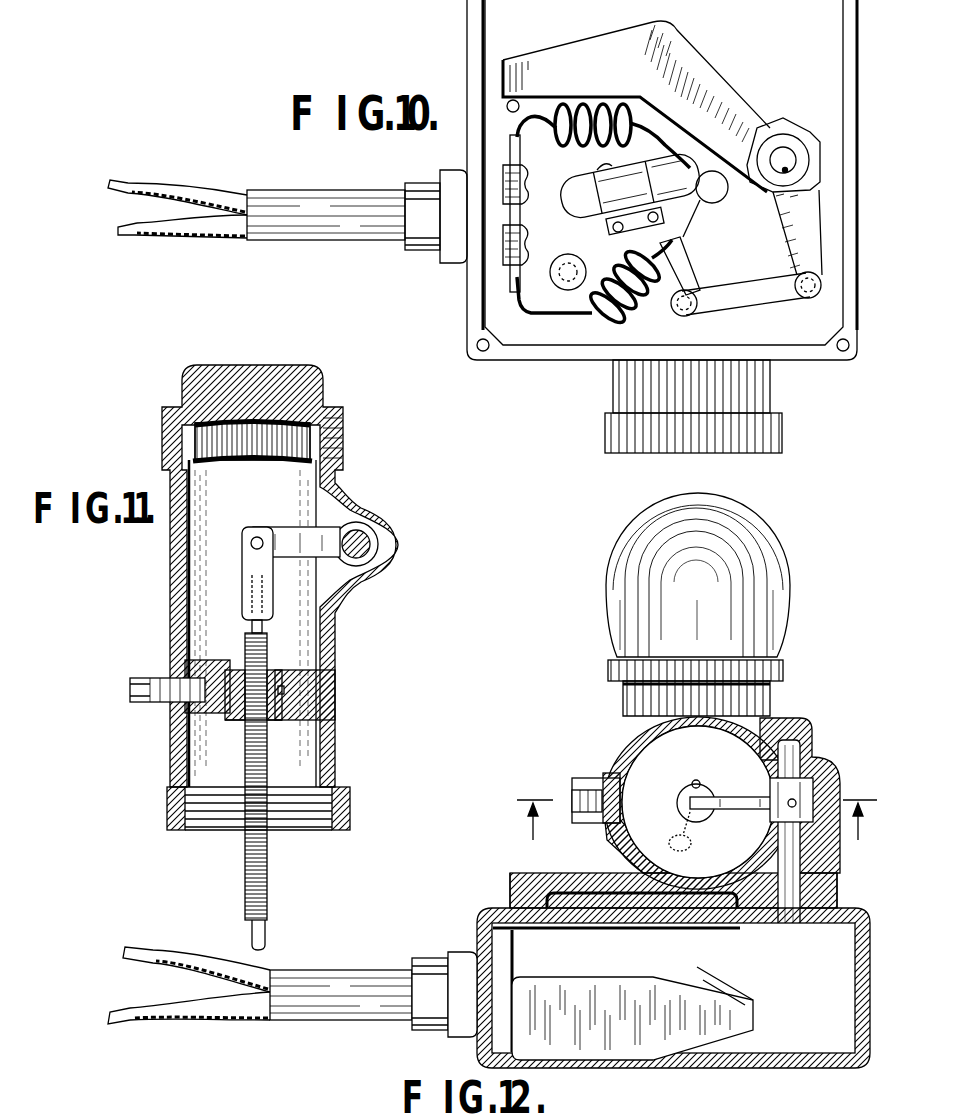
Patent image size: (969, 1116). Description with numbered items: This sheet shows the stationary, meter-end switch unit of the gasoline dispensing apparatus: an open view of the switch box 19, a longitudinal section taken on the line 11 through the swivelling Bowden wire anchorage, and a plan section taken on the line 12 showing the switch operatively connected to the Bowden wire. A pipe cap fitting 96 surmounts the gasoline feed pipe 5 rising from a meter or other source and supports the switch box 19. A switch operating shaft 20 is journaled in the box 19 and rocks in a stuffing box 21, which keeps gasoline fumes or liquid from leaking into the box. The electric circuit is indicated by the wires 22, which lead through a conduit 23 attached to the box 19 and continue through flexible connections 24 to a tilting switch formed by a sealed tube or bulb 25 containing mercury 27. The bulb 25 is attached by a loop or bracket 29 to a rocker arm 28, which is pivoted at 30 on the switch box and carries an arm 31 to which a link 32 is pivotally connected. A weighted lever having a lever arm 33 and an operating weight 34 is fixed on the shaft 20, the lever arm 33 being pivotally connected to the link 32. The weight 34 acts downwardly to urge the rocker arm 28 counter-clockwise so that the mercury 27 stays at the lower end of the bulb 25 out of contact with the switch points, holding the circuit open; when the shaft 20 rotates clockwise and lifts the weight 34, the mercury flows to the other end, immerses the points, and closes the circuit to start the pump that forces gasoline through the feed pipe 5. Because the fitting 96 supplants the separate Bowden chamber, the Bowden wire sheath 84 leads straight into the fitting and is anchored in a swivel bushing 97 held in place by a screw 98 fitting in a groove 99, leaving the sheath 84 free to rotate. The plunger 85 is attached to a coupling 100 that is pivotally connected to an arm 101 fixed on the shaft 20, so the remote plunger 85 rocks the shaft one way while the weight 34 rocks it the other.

In FIG. 12, the feed pipe 5 is at (622, 625).
In FIG. 12, the section line 11- 11 is at (697, 811).
In FIG. 10, the section line 12- 12 is at (649, 165).
In FIG. 10, the switch box 19 is at (512, 350).
In FIG. 12, the switch box 19 is at (483, 912).
In FIG. 10, the switch operating shaft 20 is at (786, 147).
In FIG. 11, the switch operating shaft 20 is at (380, 546).
In FIG. 12, the switch operating shaft 20 is at (800, 755).
In FIG. 10, the stuffing box 21 is at (782, 120).
In FIG. 12, the stuffing box 21 is at (815, 922).
In FIG. 10, the wires 22 is at (127, 226).
In FIG. 12, the wires 22 is at (138, 1006).
In FIG. 10, the conduit 23 is at (327, 228).
In FIG. 12, the conduit 23 is at (324, 1003).
In FIG. 10, the flexible connections 24 is at (520, 123).
In FIG. 10, the sealed mercury containing tube or bulb 25 is at (712, 171).
In FIG. 12, the sealed mercury containing tube or bulb 25 is at (588, 957).
In FIG. 10, the mercury 27 is at (597, 170).
In FIG. 10, the rocker arm 28 is at (550, 277).
In FIG. 12, the rocker arm 28 is at (568, 940).
In FIG. 10, the loop or bracket 29 is at (630, 186).
In FIG. 10, the pivot 30 is at (530, 252).
In FIG. 12, the pivot 30 is at (575, 952).
In FIG. 10, the arm 31 is at (680, 275).
In FIG. 10, the link 32 is at (753, 297).
In FIG. 12, the link 32 is at (718, 1018).
In FIG. 10, the lever arm 33 is at (683, 237).
In FIG. 10, the weight 34 is at (673, 42).
In FIG. 12, the weight 34 is at (600, 1045).
In FIG. 11, the Bowden wire sheath 84 is at (270, 870).
In FIG. 11, the plunger 85 is at (267, 937).
In FIG. 12, the plunger 85 is at (679, 833).
In FIG. 10, the pipe cap fitting 96 is at (770, 396).
In FIG. 11, the pipe cap fitting 96 is at (334, 647).
In FIG. 12, the pipe cap fitting 96 is at (645, 742).
In FIG. 11, the swivel bushing 97 is at (290, 722).
In FIG. 11, the screw 98 is at (222, 660).
In FIG. 11, the groove 99 is at (330, 688).
In FIG. 11, the coupling 100 is at (245, 574).
In FIG. 12, the coupling 100 is at (700, 786).
In FIG. 11, the arm 101 is at (287, 530).
In FIG. 12, the arm 101 is at (738, 797).